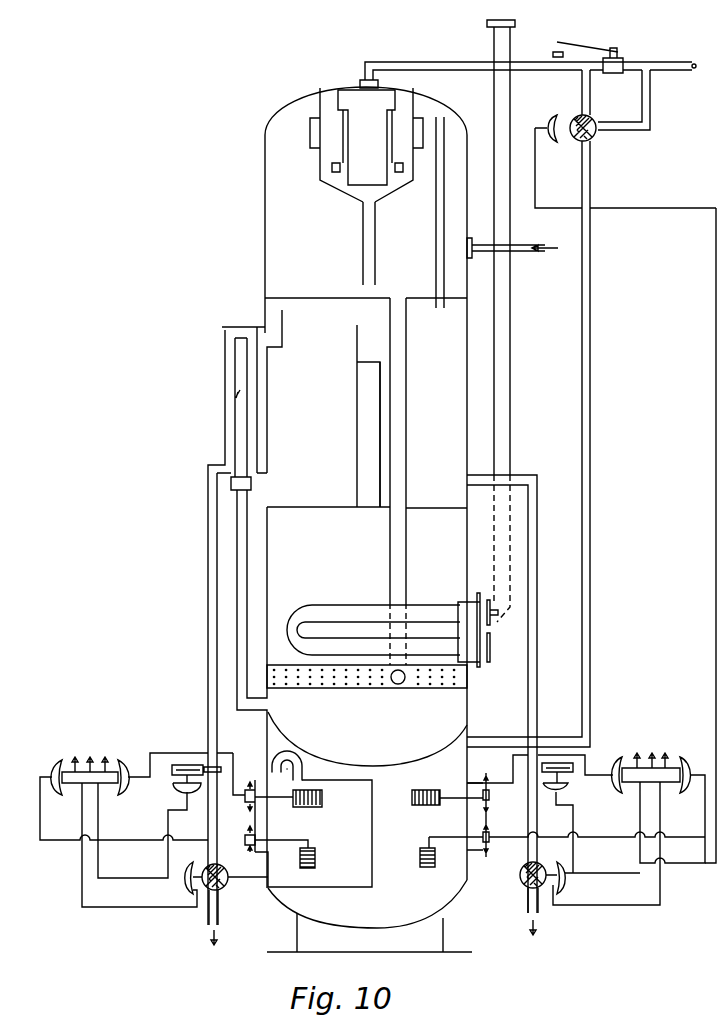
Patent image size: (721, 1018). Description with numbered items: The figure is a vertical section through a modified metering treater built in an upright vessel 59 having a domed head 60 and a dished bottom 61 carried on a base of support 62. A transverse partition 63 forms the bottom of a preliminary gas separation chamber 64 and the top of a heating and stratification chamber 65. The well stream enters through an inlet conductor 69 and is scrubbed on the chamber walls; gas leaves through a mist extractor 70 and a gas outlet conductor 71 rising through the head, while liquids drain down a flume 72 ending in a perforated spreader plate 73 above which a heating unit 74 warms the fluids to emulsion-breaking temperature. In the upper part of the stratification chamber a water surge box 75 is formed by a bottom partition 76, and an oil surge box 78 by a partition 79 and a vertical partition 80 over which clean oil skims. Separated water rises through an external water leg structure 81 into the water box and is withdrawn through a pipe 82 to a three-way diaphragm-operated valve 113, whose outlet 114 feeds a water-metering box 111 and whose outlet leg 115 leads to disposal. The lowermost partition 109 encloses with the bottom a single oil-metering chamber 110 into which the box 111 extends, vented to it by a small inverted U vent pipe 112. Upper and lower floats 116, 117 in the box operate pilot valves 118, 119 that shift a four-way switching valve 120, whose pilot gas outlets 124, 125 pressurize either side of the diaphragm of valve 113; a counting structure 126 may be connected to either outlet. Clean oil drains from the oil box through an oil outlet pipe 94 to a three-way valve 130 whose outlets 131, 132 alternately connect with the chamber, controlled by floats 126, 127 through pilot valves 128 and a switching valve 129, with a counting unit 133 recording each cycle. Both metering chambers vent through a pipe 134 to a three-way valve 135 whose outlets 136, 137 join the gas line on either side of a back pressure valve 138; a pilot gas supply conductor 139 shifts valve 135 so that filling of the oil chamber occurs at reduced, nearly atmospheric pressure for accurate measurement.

The upright vessel 59 is at (265, 240).
The domed head 60 is at (276, 118).
The dished bottom 61 is at (292, 911).
The base of support 62 is at (312, 948).
The transverse partition 63 is at (337, 300).
The preliminary gas separation chamber 64 is at (372, 212).
The heating and stratification chamber 65 is at (347, 554).
The well stream inlet conductor 69 is at (546, 248).
The mist extractor 70 is at (340, 178).
The gas outlet conductor 71 is at (470, 62).
The flume 72 is at (396, 432).
The perforated spreader plate 73 is at (358, 688).
The heating unit 74 is at (362, 606).
The water surge box 75 is at (307, 412).
The transverse bottom partition 76 is at (325, 508).
The oil surge box 78 is at (445, 451).
The transverse partition 79 is at (456, 509).
The vertical partition 80 is at (381, 412).
The external water leg structure 81 is at (237, 573).
The pipe 82 is at (208, 553).
The oil outlet pipe 94 is at (538, 528).
The lowermost partition 109 is at (370, 764).
The oil-metering chamber 110 is at (375, 855).
The water-metering box 111 is at (372, 830).
The inverted U vent pipe 112 is at (284, 764).
The three-way diaphragm-operated valve 113 is at (207, 890).
The outlet 114 is at (246, 882).
The outlet leg 115 is at (221, 915).
The upper float 116 is at (305, 808).
The lower float 117 is at (315, 857).
The pilot valve 118 is at (245, 798).
The pilot valve 119 is at (245, 843).
The switching valve 120 is at (61, 766).
The pilot gas outlet 124 is at (82, 893).
The pilot gas outlet 125 is at (133, 878).
The counting structure 126 is at (187, 765).
The lower float 127 is at (435, 868).
The pilot valves 128 is at (489, 800).
The switching valve 129 is at (675, 766).
The three-way valve 130 is at (525, 866).
The discharge outlet 131 is at (528, 902).
The second discharge outlet 132 is at (515, 883).
The counting unit 133 is at (557, 763).
The vent pipe 134 is at (590, 322).
The three-way valve 135 is at (594, 137).
The outlet 136 is at (590, 97).
The outlet 137 is at (650, 97).
The back pressure valve 138 is at (623, 66).
The pilot gas supply conductor 139 is at (690, 535).